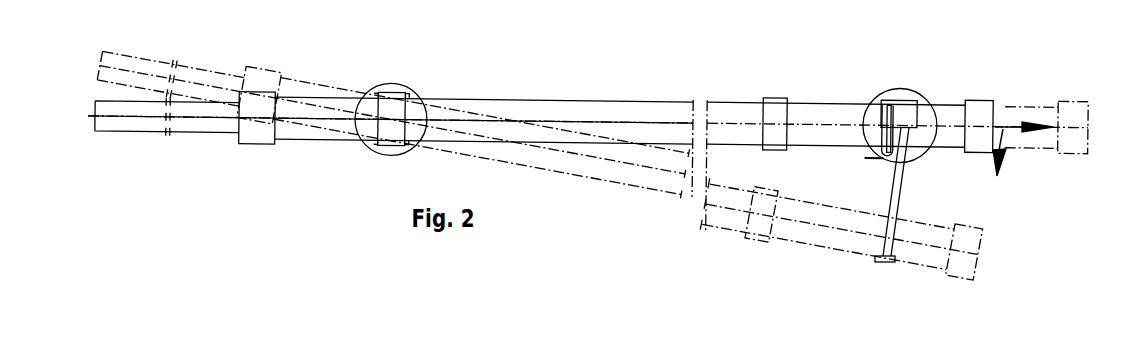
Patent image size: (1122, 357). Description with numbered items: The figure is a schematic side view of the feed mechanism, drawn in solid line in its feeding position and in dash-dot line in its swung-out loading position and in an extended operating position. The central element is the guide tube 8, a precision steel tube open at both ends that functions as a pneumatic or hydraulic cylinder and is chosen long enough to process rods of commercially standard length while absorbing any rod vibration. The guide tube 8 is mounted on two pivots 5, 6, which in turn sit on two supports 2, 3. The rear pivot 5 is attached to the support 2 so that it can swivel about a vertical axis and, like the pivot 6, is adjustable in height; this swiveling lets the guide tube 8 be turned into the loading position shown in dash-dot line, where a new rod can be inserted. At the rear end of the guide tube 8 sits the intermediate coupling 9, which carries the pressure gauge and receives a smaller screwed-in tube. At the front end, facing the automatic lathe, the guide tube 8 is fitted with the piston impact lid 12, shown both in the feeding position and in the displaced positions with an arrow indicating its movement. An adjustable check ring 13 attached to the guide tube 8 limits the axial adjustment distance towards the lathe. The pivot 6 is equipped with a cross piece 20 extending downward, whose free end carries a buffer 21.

The support 2 is at (405, 92).
The support 3 is at (879, 94).
The rear pivot 5 is at (386, 92).
The pivot 6 is at (900, 100).
The guide tube 8 is at (645, 106).
The intermediate coupling 9 is at (256, 145).
The piston impact lid 12 is at (982, 100).
The adjustable check ring 13 is at (767, 142).
The cross piece 20 is at (899, 184).
The buffer 21 is at (883, 263).